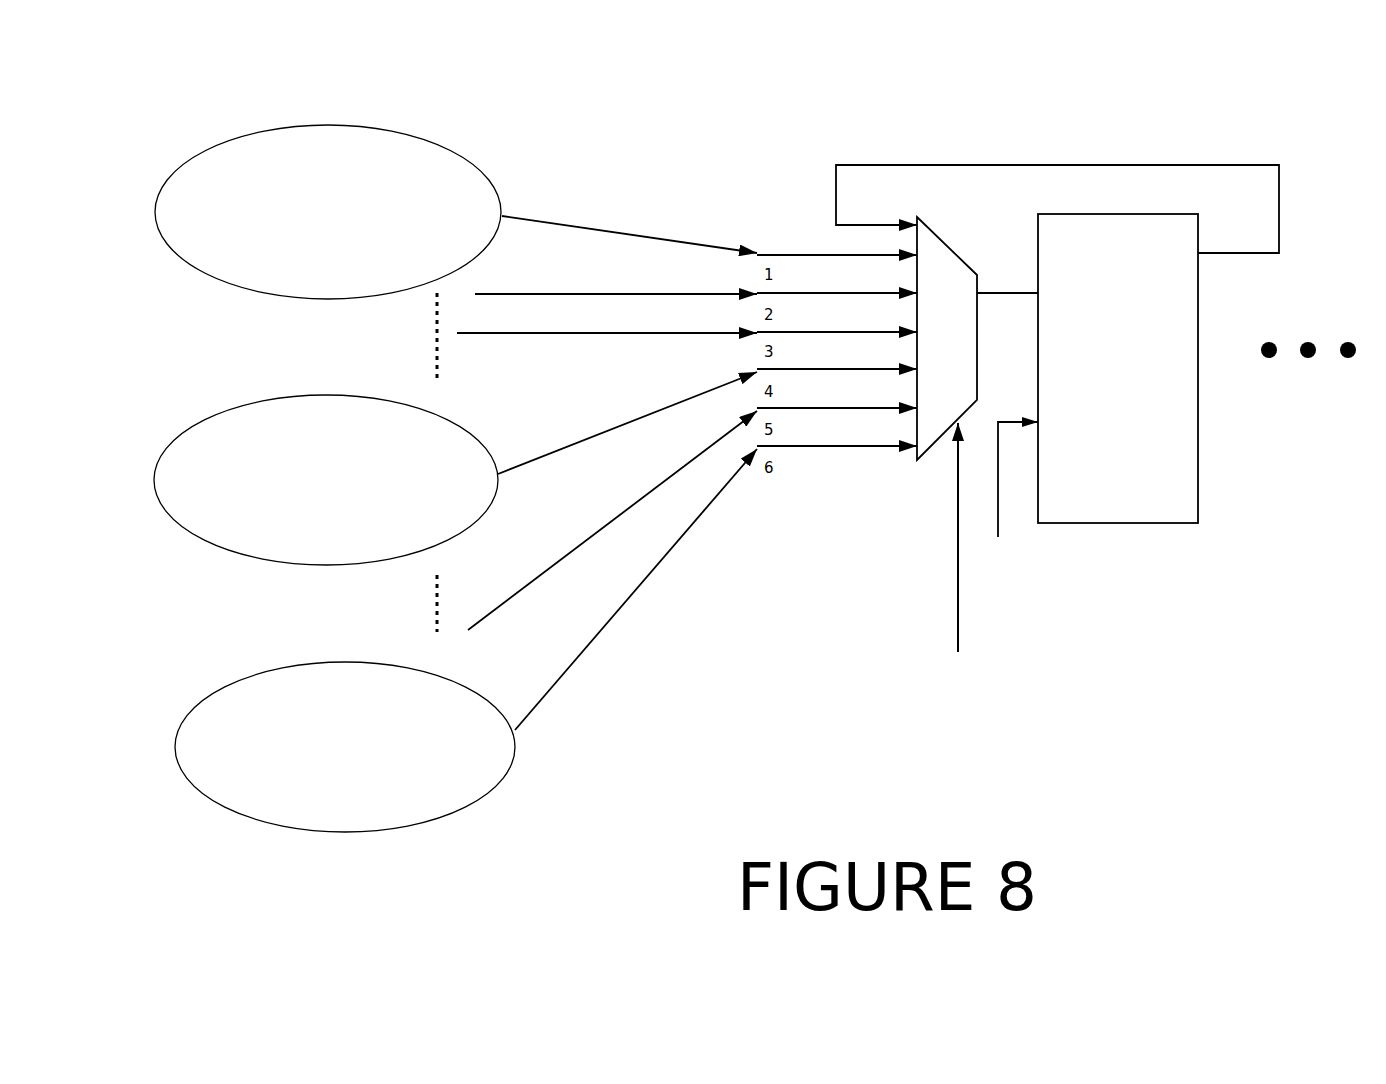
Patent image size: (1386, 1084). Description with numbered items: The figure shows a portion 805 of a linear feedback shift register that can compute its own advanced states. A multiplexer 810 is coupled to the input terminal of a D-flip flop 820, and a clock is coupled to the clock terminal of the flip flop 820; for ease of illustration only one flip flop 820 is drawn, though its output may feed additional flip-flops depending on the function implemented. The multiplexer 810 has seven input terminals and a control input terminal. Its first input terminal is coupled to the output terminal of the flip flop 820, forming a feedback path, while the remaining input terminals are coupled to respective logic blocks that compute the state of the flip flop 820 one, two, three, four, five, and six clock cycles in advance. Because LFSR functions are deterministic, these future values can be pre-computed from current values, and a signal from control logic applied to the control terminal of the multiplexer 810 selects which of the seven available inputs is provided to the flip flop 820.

The portion of linear feedback shift register 805 is at (1096, 479).
The multiplexer 810 is at (957, 252).
The D-flip flop 820 is at (1200, 472).